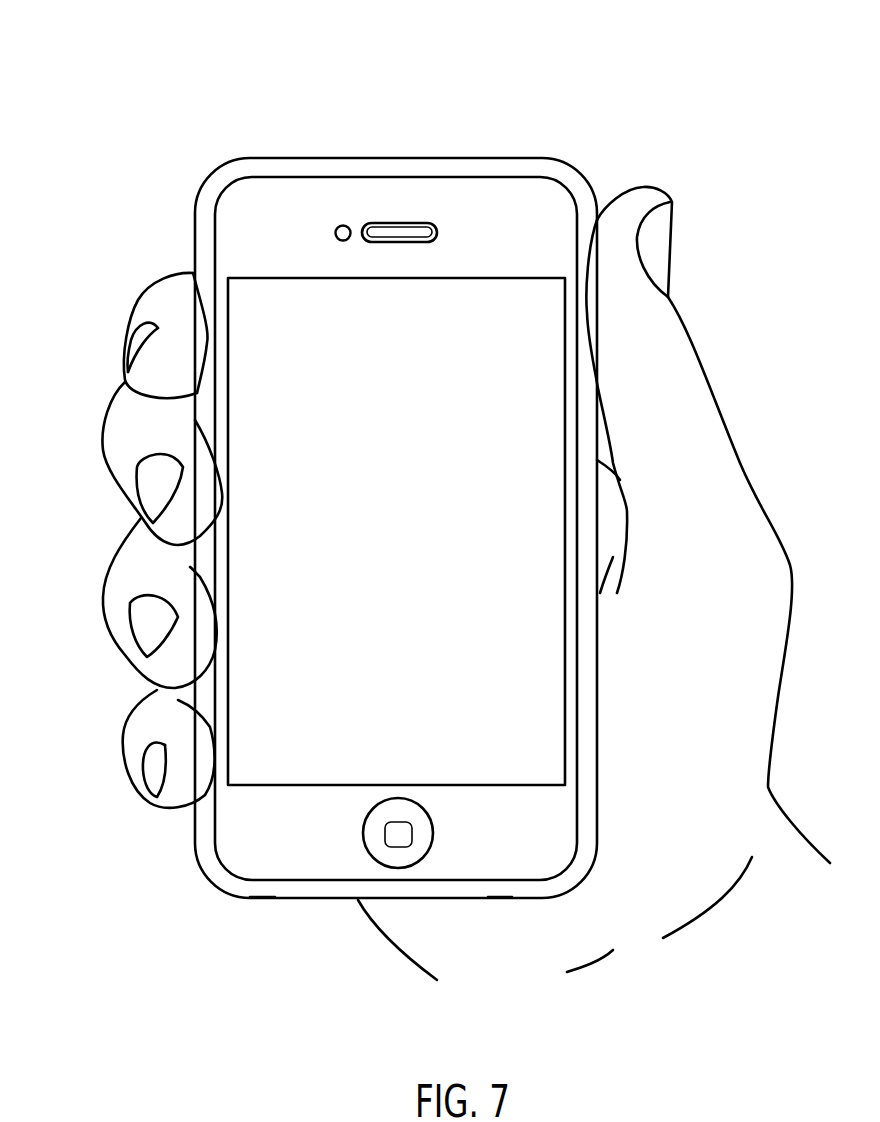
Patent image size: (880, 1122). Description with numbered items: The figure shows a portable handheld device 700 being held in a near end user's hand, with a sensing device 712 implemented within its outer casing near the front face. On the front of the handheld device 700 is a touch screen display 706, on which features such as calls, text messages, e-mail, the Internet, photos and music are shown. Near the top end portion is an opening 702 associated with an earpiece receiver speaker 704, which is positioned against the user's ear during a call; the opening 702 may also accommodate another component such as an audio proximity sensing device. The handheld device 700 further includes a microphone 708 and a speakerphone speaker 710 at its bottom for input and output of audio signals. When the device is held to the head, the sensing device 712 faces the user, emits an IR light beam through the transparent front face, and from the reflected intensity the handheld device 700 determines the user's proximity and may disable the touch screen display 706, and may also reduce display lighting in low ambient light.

The portable handheld device 700 is at (543, 157).
The opening 702 is at (383, 222).
The earpiece receiver speaker 704 is at (400, 232).
The touch screen display 706 is at (478, 310).
The microphone 708 is at (501, 912).
The speakerphone speaker 710 is at (256, 907).
The sensing device 712 is at (343, 233).